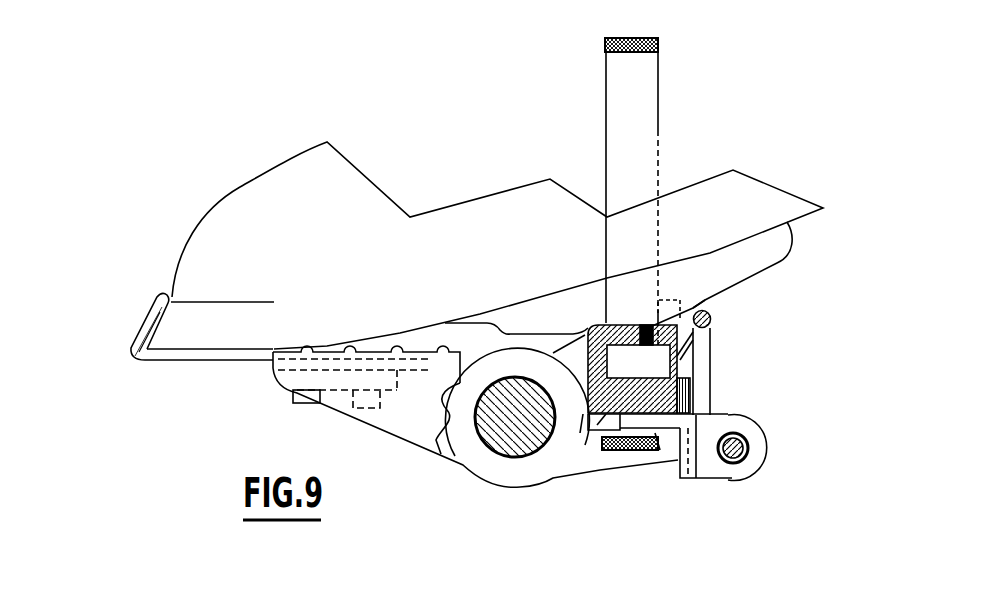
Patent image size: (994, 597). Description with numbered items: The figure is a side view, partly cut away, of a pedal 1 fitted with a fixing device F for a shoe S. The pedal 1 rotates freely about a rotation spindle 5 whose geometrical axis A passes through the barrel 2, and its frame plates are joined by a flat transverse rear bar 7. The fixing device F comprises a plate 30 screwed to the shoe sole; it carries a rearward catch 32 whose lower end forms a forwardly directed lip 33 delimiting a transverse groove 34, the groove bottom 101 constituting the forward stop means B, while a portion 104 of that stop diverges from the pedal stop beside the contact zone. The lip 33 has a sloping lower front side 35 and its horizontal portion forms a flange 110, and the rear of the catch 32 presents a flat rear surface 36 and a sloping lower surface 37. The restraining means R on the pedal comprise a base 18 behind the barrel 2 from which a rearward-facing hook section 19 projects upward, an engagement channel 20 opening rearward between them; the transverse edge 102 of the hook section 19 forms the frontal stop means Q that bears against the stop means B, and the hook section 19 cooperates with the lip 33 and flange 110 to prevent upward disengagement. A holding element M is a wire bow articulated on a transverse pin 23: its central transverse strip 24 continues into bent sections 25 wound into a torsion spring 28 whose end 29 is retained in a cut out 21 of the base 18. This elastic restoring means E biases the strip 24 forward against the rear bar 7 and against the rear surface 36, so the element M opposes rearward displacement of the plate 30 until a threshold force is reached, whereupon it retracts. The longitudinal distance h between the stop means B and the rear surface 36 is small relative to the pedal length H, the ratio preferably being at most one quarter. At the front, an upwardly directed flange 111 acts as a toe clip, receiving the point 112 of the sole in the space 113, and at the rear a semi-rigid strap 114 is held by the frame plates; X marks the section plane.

The pedal 1 is at (302, 413).
The barrel 2 is at (485, 453).
The rotation spindle 5 is at (483, 440).
The rear bar 7 is at (690, 405).
The base 18 is at (600, 425).
The hook section 19 is at (580, 326).
The engagement channel 20 is at (560, 445).
The cut out 21 is at (587, 420).
The transverse pin 23 is at (744, 445).
The transverse strip 24 is at (718, 310).
The bent sections 25 is at (702, 387).
The torsion spring 28 is at (745, 462).
The spring end 29 is at (682, 470).
The plate 30 is at (727, 260).
The rearward catch 32 is at (672, 307).
The lip 33 is at (657, 450).
The transverse groove 34 is at (470, 437).
The lower front side 35 is at (585, 425).
The rear surface 36 is at (712, 336).
The lower surface 37 is at (680, 350).
The groove bottom 101 is at (597, 422).
The transverse edge 102 is at (625, 317).
The stop portion 104 is at (650, 450).
The flange 110 is at (608, 318).
The front flange 111 is at (150, 320).
The point 112 is at (163, 340).
The space 113 is at (147, 342).
The semi-rigid strap 114 is at (605, 43).
The shoe S is at (255, 202).
The longitudinal dimension of the pedal H is at (692, 417).
The longitudinal distance h is at (637, 320).
The section plane X is at (437, 324).
The geometrical axis A is at (522, 412).
The forward stop means B is at (643, 320).
The frontal stop means Q is at (600, 322).
The restraining means R is at (510, 445).
The holding element M is at (721, 327).
The elastic restoring means E is at (770, 453).
The fixing device F is at (758, 502).